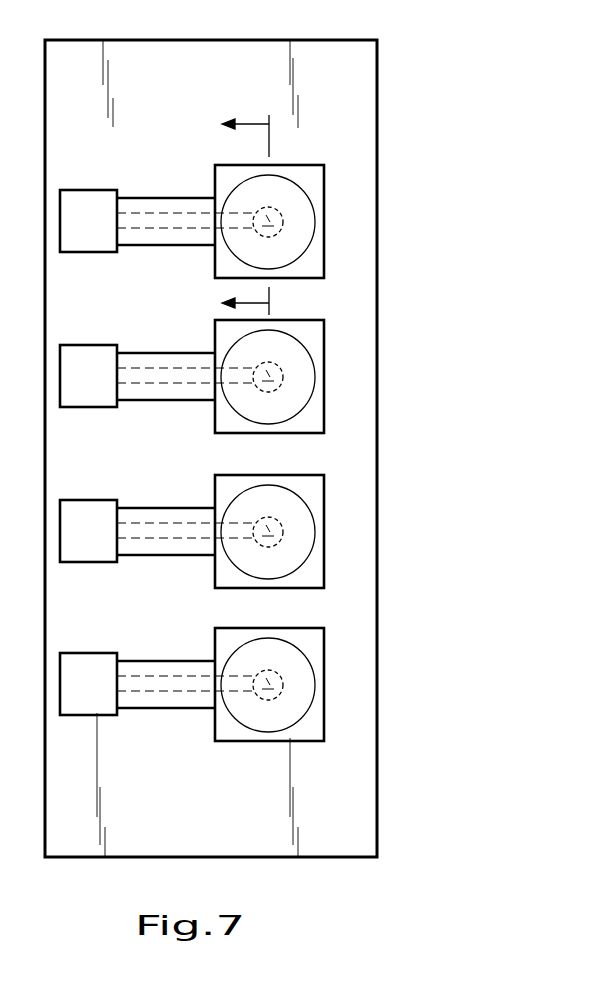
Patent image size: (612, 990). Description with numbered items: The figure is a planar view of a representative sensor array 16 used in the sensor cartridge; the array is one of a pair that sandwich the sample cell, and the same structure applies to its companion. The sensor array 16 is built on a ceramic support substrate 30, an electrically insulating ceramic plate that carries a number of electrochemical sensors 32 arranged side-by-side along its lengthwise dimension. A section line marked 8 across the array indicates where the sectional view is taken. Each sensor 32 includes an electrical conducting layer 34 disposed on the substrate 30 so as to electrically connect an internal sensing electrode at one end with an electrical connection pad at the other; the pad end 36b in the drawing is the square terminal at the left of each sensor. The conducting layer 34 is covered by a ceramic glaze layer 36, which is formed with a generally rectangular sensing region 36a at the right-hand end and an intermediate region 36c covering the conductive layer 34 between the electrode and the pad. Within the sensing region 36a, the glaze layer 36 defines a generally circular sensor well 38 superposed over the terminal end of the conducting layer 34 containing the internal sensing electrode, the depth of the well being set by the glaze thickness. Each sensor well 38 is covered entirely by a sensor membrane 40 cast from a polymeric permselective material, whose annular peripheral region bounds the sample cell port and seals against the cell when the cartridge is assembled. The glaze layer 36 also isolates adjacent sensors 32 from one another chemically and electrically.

The sensor array 16 is at (393, 87).
The ceramic support substrate 30 is at (176, 102).
The section line 8- 8 is at (233, 213).
The electrochemical sensor 32 is at (334, 240).
The electrical conducting layer 34 is at (168, 213).
The ceramic glaze layer 36 is at (290, 275).
The sensing region 36a is at (325, 178).
The terminal pad 36b is at (92, 200).
The intermediate region 36c is at (168, 246).
The sensor well 38 is at (278, 215).
The sensor membrane 40 is at (300, 245).